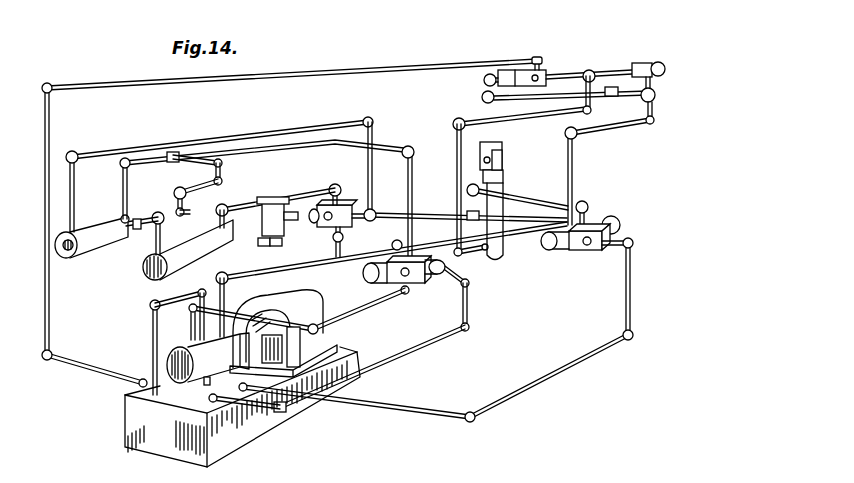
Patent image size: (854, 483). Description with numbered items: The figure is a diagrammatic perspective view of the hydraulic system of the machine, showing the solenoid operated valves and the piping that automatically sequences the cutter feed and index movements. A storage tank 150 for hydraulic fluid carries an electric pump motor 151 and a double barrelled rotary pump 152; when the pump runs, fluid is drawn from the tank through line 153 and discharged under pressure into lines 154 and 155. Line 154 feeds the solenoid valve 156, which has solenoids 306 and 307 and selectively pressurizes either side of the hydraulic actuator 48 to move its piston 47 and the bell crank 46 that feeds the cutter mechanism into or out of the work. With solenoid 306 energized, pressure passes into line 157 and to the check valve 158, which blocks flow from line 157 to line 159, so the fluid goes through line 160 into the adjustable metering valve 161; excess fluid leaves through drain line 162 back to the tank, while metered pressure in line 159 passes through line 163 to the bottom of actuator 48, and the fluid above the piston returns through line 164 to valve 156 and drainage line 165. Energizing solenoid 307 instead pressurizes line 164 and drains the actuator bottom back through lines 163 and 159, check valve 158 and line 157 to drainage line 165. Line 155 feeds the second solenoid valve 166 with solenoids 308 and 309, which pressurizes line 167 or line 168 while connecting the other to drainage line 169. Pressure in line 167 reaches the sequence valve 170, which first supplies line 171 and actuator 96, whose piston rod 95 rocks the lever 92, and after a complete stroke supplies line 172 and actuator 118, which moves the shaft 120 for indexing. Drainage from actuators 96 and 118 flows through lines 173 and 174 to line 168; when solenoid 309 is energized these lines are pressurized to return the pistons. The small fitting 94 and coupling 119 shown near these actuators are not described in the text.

The bell crank 46 is at (498, 150).
The piston 47 is at (504, 165).
The hydraulic actuator 48 is at (501, 262).
The lever 92 is at (261, 216).
The fitting 94 is at (278, 246).
The piston rod 95 is at (262, 246).
The actuator 96 is at (152, 272).
The actuator 118 is at (90, 252).
The pipe coupling 119 is at (136, 232).
The shaft 120 is at (141, 217).
The storage tank 150 is at (165, 448).
The electric pump motor 151 is at (305, 300).
The double barrelled rotary pump 152 is at (166, 360).
The line 153 is at (153, 342).
The line 154 is at (290, 270).
The line 155 is at (333, 322).
The solenoid valve 156 is at (589, 214).
The line 157 is at (573, 180).
The check valve 158 is at (660, 70).
The line 159 is at (615, 71).
The line 160 is at (560, 92).
The metering valve 161 is at (547, 71).
The drain line 162 is at (383, 70).
The line 163 is at (475, 118).
The line 164 is at (536, 201).
The drainage line 165 is at (631, 312).
The solenoid valve 166 is at (409, 285).
The line 167 is at (393, 250).
The line 168 is at (413, 218).
The drainage line 169 is at (469, 318).
The sequence valve 170 is at (341, 204).
The line 171 is at (310, 186).
The line 172 is at (373, 137).
The line 173 is at (200, 186).
The line 174 is at (124, 193).
The solenoid 306 is at (557, 248).
The solenoid 307 is at (621, 226).
The solenoid 308 is at (380, 276).
The solenoid 309 is at (444, 268).